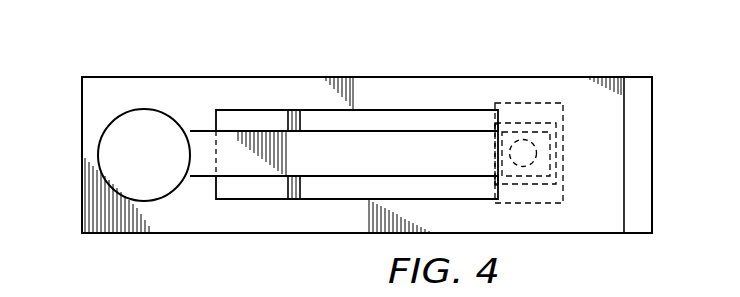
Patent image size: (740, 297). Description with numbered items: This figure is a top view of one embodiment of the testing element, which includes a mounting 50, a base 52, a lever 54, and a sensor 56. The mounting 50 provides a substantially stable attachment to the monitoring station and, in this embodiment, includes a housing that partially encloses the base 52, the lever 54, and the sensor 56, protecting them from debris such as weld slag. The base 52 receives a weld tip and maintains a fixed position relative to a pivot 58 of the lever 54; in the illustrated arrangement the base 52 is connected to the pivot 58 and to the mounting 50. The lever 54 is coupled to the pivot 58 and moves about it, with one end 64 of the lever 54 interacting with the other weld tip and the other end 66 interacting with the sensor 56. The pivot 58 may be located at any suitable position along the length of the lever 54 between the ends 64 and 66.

The mounting 50 is at (652, 146).
The base 52 is at (82, 138).
The lever 54 is at (363, 131).
The sensor 56 is at (537, 150).
The pivot 58 is at (288, 188).
The end of lever 64 is at (158, 170).
The other end of lever 66 is at (493, 127).